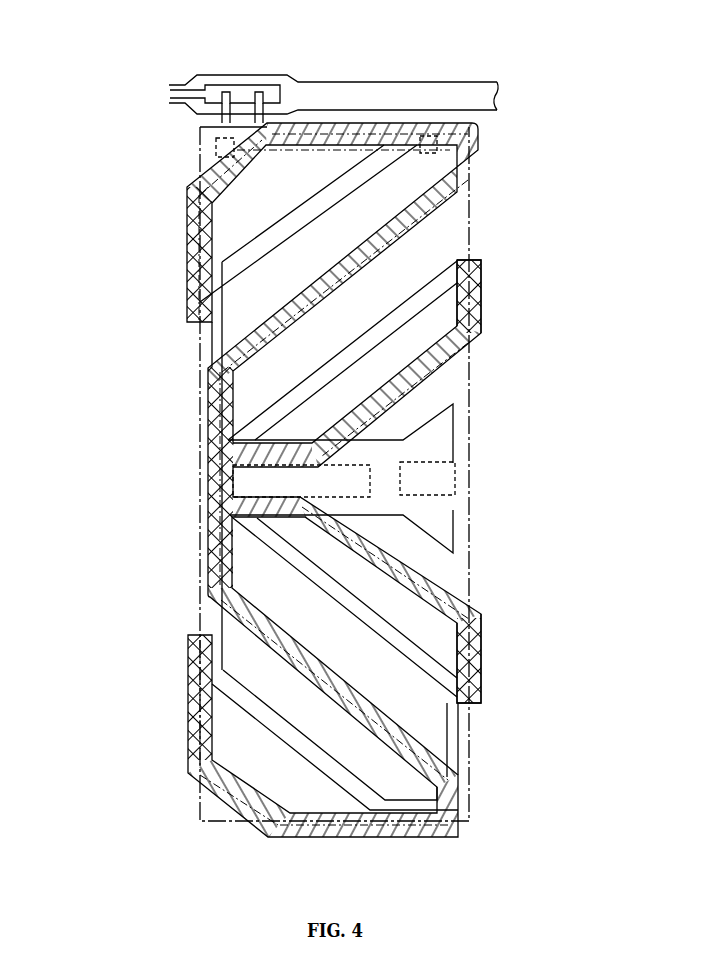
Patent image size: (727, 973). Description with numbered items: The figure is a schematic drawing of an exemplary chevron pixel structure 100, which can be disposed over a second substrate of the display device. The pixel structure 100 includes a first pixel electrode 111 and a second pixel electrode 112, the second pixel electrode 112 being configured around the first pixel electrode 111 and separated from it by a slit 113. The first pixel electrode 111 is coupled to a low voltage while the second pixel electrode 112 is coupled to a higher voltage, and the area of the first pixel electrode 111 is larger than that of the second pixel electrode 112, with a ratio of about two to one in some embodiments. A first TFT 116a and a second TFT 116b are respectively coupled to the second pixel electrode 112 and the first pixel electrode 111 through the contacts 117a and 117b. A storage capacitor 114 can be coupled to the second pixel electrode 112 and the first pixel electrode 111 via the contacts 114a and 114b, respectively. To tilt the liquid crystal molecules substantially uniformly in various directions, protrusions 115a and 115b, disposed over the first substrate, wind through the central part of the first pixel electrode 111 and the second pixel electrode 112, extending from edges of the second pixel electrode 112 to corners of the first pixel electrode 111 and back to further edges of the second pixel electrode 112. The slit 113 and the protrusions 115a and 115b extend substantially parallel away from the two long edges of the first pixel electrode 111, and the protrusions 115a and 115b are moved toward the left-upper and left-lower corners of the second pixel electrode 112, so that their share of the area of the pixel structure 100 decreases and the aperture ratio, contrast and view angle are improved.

The pixel structure 100 is at (183, 337).
The first pixel electrode 111 is at (474, 227).
The second pixel electrode 112 is at (205, 168).
The slit 113 is at (476, 256).
The storage capacitor 114 is at (461, 482).
The contact 114a is at (420, 462).
The contact 114b is at (250, 481).
The protrusion 115a is at (483, 331).
The protrusion 115b is at (483, 663).
The first TFT 116a is at (217, 75).
The second TFT 116b is at (268, 78).
The contact 117a is at (212, 143).
The contact 117b is at (439, 157).